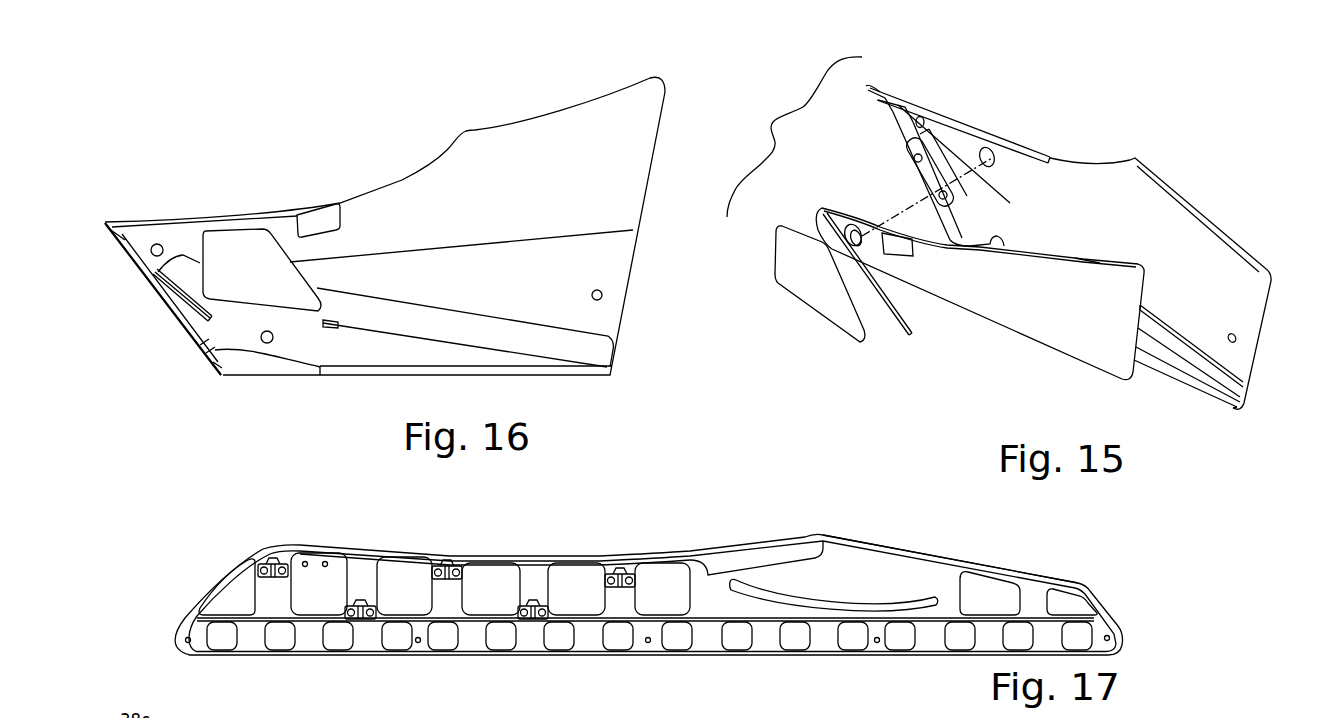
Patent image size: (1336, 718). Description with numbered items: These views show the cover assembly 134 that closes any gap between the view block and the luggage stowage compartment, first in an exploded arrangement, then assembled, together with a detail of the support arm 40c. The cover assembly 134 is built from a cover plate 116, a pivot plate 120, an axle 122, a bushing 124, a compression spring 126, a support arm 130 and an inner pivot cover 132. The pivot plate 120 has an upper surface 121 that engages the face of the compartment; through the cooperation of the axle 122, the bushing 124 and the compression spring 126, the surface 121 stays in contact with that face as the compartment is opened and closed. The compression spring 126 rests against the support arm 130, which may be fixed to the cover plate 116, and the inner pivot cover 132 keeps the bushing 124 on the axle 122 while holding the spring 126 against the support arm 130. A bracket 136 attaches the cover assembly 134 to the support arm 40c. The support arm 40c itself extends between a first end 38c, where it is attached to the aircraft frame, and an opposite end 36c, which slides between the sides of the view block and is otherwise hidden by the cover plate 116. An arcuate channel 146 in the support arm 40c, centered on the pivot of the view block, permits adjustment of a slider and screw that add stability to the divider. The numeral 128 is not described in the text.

In FIG. 16, the cover plate 116 is at (628, 300).
In FIG. 15, the cover plate 116 is at (1265, 312).
In FIG. 16, the pivot plate 120 is at (398, 176).
In FIG. 15, the pivot plate 120 is at (1100, 262).
In FIG. 15, the upper surface 121 is at (1086, 258).
In FIG. 15, the axle 122 is at (1000, 152).
In FIG. 15, the bushing 124 is at (831, 222).
In FIG. 15, the compression spring 126 is at (908, 325).
In FIG. 15, the rail 128 is at (1083, 260).
In FIG. 15, the support arm 130 is at (1215, 360).
In FIG. 16, the inner pivot cover 132 is at (254, 230).
In FIG. 15, the inner pivot cover 132 is at (832, 325).
In FIG. 16, the cover assembly 134 is at (189, 383).
In FIG. 15, the cover assembly 134 is at (794, 137).
In FIG. 15, the bracket 136 is at (905, 166).
In FIG. 17, the first end of the support arm 36c is at (1100, 601).
In FIG. 17, the first end of the support arm 38c is at (195, 592).
In FIG. 17, the support arm 40c is at (615, 558).
In FIG. 17, the arcuate channel 146 is at (849, 605).